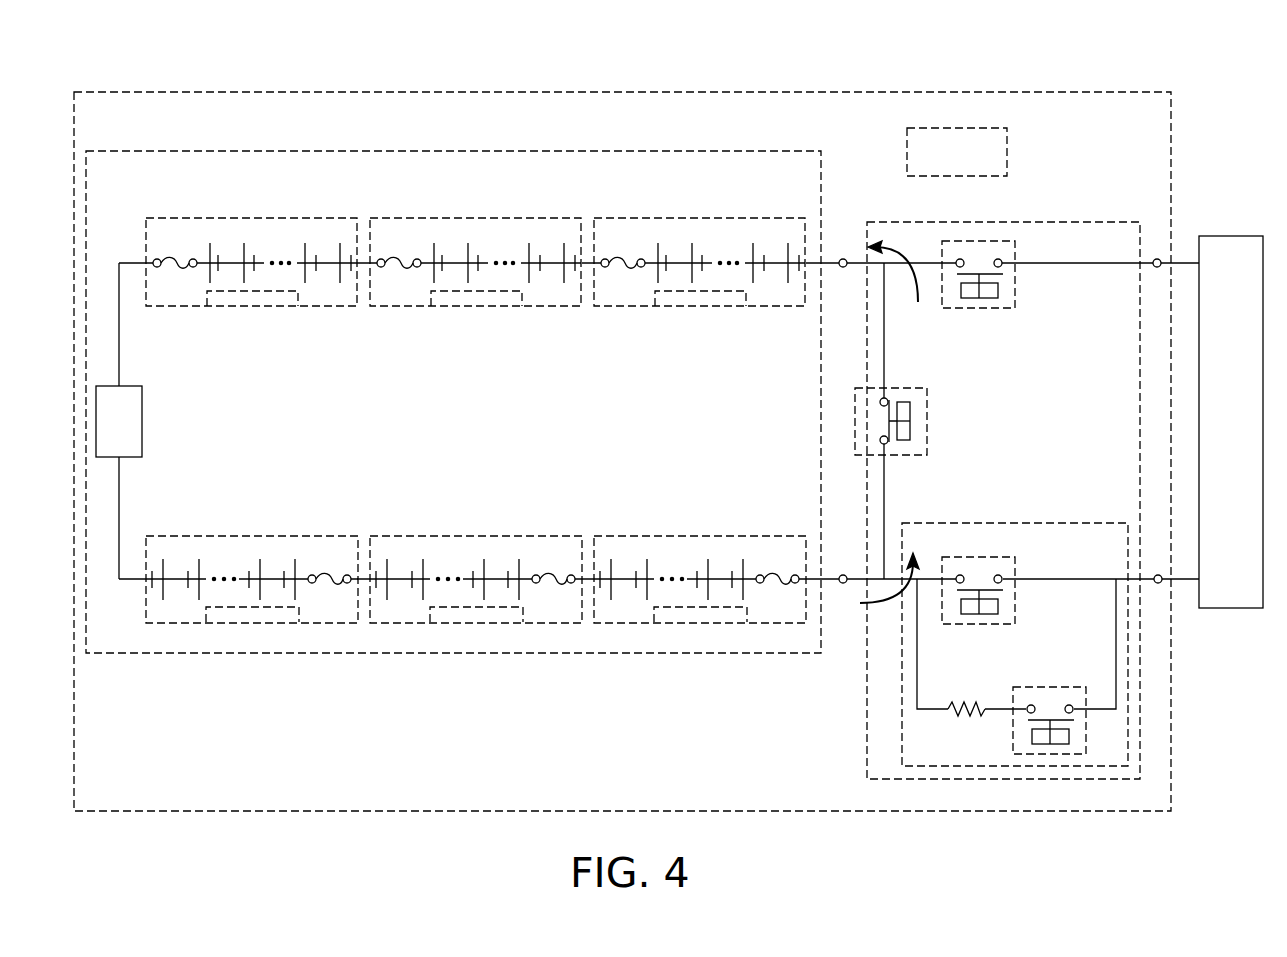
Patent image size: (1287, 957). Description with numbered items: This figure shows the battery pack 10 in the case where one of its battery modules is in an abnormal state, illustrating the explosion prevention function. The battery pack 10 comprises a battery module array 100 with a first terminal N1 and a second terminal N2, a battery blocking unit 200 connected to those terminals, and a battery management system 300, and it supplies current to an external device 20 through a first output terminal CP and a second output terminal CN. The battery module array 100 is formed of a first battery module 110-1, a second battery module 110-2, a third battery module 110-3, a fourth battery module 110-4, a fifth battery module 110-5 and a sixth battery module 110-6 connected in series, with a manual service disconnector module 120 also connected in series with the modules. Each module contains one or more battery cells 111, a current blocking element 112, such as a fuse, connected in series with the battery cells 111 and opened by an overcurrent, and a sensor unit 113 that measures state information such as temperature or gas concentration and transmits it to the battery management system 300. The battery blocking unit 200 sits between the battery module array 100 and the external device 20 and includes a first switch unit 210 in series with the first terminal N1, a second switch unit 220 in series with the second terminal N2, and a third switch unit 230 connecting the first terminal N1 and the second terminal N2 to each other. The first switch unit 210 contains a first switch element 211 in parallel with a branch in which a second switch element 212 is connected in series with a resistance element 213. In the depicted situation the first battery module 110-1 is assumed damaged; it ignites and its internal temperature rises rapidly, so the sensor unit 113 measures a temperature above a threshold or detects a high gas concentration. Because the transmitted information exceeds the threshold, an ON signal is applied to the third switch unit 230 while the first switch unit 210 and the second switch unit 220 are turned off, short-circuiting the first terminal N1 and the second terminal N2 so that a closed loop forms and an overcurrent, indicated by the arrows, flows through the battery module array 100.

The battery pack 10 is at (1082, 91).
The external device 20 is at (1240, 237).
The battery module array 100 is at (750, 151).
The first battery module 110-1 is at (700, 595).
The second battery module 110-2 is at (455, 536).
The third battery module 110-3 is at (229, 536).
The fourth battery module 110-4 is at (229, 218).
The fifth battery module 110-5 is at (455, 218).
The sixth battery module 110-6 is at (676, 218).
The battery cell 111 is at (737, 588).
The current blocking element 112 is at (783, 584).
The sensor unit 113 is at (667, 613).
The manual service disconnector module 120 is at (143, 421).
The battery blocking unit 200 is at (1118, 222).
The first switch unit 210 is at (1061, 523).
The first switch element 211 is at (1018, 607).
The second switch element 212 is at (1058, 688).
The resistance element 213 is at (964, 706).
The second switch unit 220 is at (1018, 290).
The third switch unit 230 is at (927, 405).
The battery management system 300 is at (1008, 153).
The first terminal N1 is at (843, 575).
The second terminal N2 is at (843, 259).
The second output terminal CN is at (1160, 259).
The first output terminal CP is at (1162, 584).